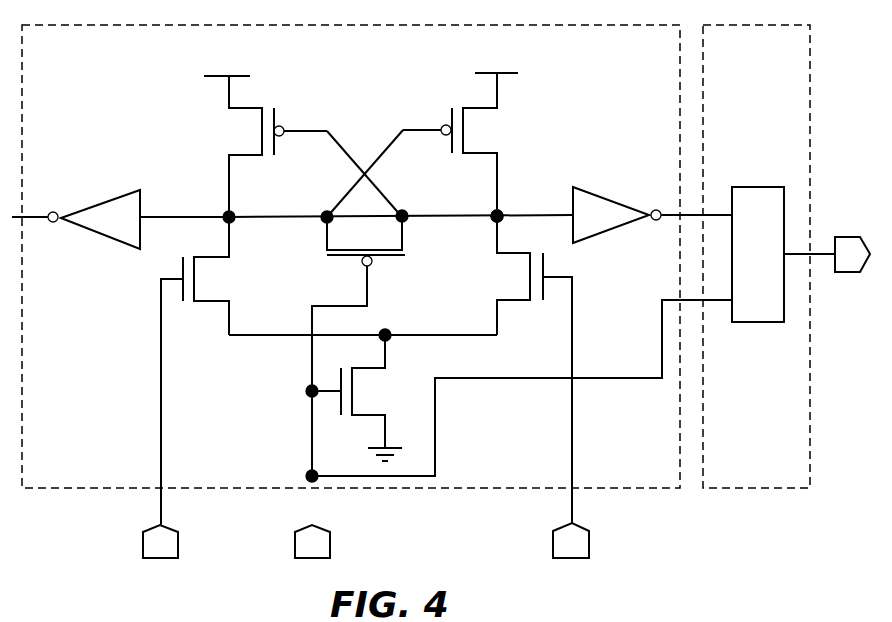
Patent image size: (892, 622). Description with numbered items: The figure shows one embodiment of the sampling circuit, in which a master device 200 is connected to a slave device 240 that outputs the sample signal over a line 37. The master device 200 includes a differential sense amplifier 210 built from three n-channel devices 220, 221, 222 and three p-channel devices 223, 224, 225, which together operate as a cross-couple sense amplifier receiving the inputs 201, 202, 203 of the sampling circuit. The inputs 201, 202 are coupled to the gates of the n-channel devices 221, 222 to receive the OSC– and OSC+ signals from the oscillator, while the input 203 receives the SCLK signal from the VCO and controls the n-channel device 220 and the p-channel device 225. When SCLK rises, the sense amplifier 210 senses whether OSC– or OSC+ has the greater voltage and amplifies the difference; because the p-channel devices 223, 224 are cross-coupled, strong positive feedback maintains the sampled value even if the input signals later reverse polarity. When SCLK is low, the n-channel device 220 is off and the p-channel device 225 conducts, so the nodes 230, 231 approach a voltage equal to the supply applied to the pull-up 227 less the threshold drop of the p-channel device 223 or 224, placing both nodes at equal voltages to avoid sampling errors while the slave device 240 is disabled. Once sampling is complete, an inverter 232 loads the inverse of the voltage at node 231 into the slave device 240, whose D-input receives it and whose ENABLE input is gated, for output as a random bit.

The master device 200 is at (131, 92).
The slave device 240 is at (774, 91).
The pull-up 227 is at (217, 76).
The differential sense amplifier 210 is at (354, 115).
The p-channel device 223 is at (169, 162).
The p-channel device 224 is at (460, 144).
The p-channel device 225 is at (358, 346).
The n-channel device 221 is at (201, 371).
The n-channel device 222 is at (531, 369).
The n-channel device 220 is at (354, 395).
The node 230 is at (222, 216).
The node 231 is at (496, 212).
The inverter 232 is at (652, 215).
The input 201 is at (161, 497).
The input 202 is at (574, 505).
The input 203 is at (314, 500).
The line 37 is at (821, 247).